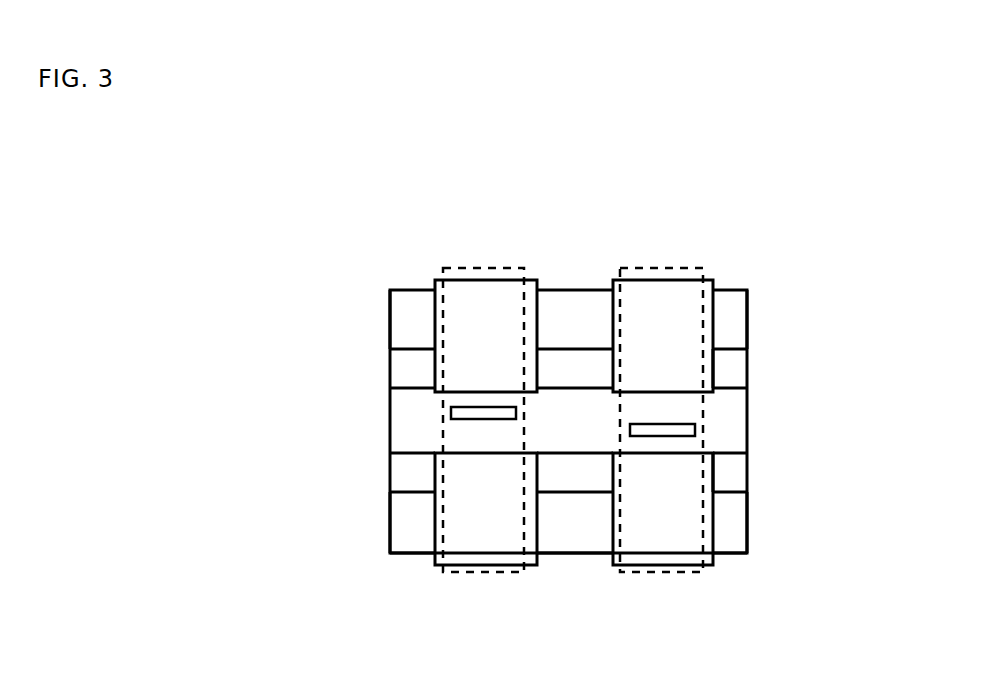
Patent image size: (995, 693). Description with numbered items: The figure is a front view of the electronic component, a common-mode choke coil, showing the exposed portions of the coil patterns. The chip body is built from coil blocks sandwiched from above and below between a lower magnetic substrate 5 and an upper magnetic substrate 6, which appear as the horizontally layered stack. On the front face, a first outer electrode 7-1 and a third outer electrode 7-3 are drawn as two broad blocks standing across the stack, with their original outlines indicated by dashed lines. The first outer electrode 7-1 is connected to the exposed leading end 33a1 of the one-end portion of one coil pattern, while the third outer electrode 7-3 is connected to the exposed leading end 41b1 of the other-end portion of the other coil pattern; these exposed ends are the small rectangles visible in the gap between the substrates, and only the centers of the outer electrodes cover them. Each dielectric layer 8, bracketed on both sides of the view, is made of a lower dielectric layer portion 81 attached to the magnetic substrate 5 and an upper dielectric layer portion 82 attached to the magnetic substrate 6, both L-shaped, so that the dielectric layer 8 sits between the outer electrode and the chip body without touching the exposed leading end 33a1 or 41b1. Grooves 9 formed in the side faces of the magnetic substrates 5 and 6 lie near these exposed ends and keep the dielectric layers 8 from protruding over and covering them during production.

The magnetic substrate 5 is at (423, 542).
The magnetic substrate 6 is at (405, 298).
The first outer electrode 7-1 is at (457, 268).
The third outer electrode 7-3 is at (636, 268).
The dielectric layer 8 is at (252, 322).
The groove 9 is at (747, 360).
The exposed leading end 33a1 is at (470, 417).
The exposed leading end 41b1 is at (698, 428).
The lower dielectric layer portion 81 is at (435, 527).
The upper dielectric layer portion 82 is at (435, 340).